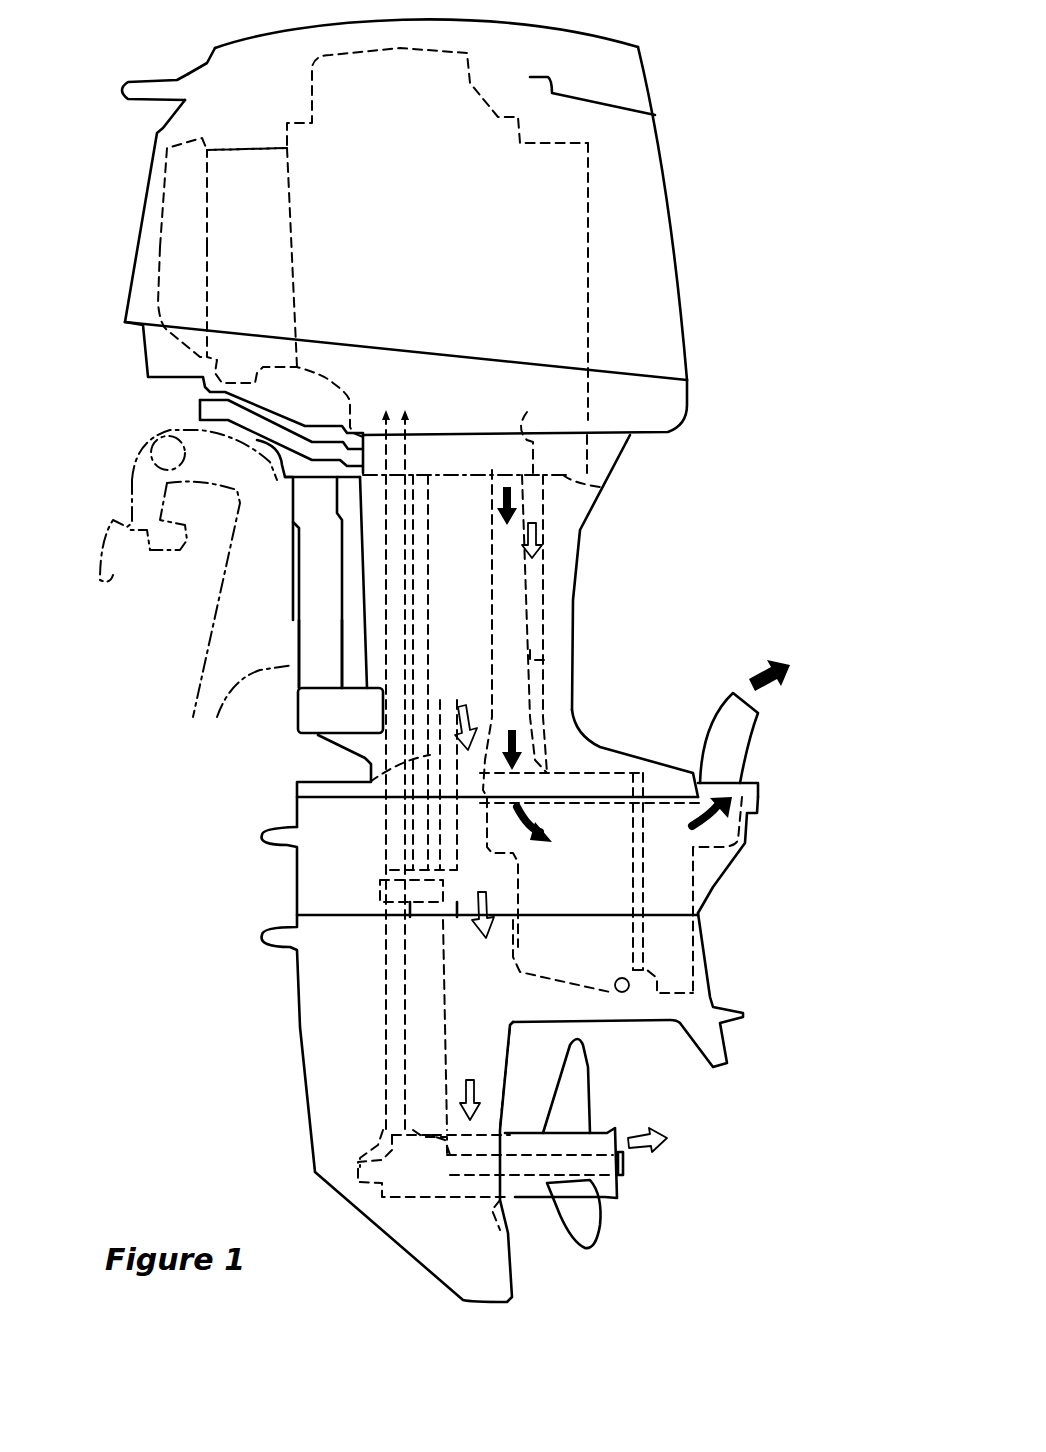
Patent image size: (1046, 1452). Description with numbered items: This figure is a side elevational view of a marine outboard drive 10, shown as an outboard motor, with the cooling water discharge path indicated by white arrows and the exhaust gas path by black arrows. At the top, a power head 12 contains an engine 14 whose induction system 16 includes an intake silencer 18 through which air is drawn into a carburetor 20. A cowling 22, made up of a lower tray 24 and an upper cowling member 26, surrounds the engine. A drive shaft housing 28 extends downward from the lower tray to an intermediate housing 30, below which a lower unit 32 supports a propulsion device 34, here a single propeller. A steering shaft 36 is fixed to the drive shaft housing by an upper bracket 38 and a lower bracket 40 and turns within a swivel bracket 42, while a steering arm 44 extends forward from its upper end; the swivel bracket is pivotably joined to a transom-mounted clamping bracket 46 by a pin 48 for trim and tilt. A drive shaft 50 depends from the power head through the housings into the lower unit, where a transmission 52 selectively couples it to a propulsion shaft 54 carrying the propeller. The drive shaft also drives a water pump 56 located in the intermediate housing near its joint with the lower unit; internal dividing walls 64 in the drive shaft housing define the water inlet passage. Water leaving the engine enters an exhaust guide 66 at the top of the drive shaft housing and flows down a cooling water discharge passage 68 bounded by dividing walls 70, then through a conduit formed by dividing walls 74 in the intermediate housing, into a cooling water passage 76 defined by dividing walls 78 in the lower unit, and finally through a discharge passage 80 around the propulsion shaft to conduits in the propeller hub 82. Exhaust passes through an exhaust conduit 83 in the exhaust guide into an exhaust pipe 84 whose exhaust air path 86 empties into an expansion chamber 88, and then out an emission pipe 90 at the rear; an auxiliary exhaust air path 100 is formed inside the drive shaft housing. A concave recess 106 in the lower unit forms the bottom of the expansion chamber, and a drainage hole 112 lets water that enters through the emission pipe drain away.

The marine outboard drive 10 is at (805, 213).
The power head 12 is at (626, 160).
The engine 14 is at (593, 245).
The induction system 16 is at (258, 112).
The intake silencer 18 is at (160, 207).
The carburetor 20 is at (237, 143).
The cowling 22 is at (690, 316).
The lower tray 24 is at (687, 403).
The upper cowling member 26 is at (680, 268).
The drive shaft housing 28 is at (665, 455).
The intermediate housing 30 is at (725, 875).
The lower unit 32 is at (297, 1030).
The propulsion device 34 is at (600, 1220).
The steering shaft 36 is at (320, 663).
The upper bracket 38 is at (292, 495).
The lower bracket 40 is at (325, 728).
The swivel bracket 42 is at (317, 652).
The steering arm 44 is at (200, 408).
The clamping bracket 46 is at (207, 630).
The pin 48 is at (130, 478).
The drive shaft 50 is at (330, 800).
The transmission 52 is at (402, 1200).
The propulsion shaft 54 is at (532, 1158).
The water pump 56 is at (430, 838).
The internal dividing walls 64 is at (395, 578).
The exhaust guide 66 is at (605, 485).
The cooling water discharge passage 68 is at (560, 568).
The dividing walls 70 is at (540, 588).
The dividing walls 74 is at (380, 880).
The cooling water passage 76 is at (500, 1053).
The dividing walls 78 is at (440, 1050).
The discharge passage 80 is at (505, 1230).
The hub 82 is at (612, 1128).
The exhaust conduit 83 is at (527, 430).
The exhaust pipe 84 is at (515, 635).
The exhaust air path 86 is at (568, 657).
The expansion chamber 88 is at (710, 893).
The emission pipe 90 is at (745, 748).
The auxiliary exhaust air path 100 is at (605, 745).
The concave recess 106 is at (575, 978).
The drainage hole 112 is at (626, 992).